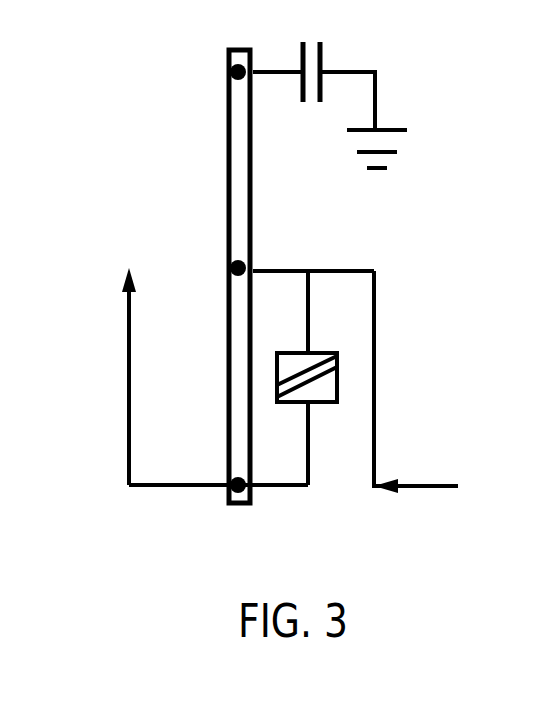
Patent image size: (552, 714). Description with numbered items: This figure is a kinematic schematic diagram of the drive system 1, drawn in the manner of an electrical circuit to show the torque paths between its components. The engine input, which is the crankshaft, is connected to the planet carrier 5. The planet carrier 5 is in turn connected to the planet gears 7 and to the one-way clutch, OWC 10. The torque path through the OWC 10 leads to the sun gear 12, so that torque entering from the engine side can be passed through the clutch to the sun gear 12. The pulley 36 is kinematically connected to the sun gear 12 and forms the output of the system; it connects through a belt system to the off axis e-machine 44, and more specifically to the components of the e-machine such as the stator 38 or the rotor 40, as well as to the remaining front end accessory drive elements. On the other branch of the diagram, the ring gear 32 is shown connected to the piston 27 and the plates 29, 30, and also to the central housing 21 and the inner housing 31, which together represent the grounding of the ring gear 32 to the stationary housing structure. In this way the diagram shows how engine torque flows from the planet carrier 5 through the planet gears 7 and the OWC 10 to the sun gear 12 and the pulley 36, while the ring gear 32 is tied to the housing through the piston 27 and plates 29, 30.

The system 1 is at (468, 271).
The planet carrier 5 is at (375, 425).
The planet gears 7 is at (243, 262).
The OWC 10 is at (318, 353).
The sun gear 12 is at (235, 506).
The central housing 21 is at (404, 158).
The inner housing 31 is at (385, 152).
The piston 27 is at (369, 76).
The plate 29 is at (369, 76).
The plate 30 is at (322, 53).
The ring gear 32 is at (230, 68).
The pulley 36 is at (132, 377).
The stator 38 is at (112, 178).
The rotor 40 is at (127, 208).
The off axis e-machine 44 is at (112, 178).